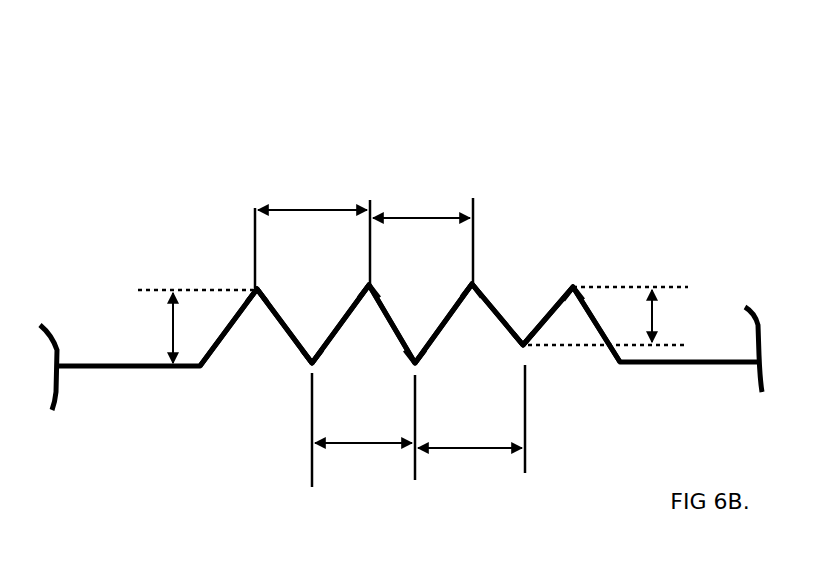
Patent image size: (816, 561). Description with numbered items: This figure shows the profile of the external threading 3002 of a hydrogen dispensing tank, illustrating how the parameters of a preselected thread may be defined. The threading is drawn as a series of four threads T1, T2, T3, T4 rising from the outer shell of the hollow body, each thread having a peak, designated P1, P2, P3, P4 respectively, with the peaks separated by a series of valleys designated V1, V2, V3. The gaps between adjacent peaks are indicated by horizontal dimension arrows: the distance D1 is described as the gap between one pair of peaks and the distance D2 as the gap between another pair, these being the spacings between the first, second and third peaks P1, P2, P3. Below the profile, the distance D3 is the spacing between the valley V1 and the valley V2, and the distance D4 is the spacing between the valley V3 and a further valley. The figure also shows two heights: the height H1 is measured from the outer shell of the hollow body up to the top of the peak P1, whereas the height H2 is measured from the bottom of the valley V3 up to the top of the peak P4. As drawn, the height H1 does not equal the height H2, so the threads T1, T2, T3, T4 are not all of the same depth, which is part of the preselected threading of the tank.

The external threading 3002 is at (150, 158).
The height from outer shell to top of peak P1 H1 is at (172, 329).
The height from bottom of valley V3 to top of peak P4 H2 is at (653, 323).
The distance D1 is at (318, 210).
The distance D2 is at (412, 218).
The distance D3 is at (360, 445).
The distance D4 is at (467, 450).
The peak P1 is at (263, 289).
The peak P2 is at (376, 285).
The peak P3 is at (479, 283).
The peak P4 is at (577, 281).
The valley V1 is at (303, 367).
The valley V2 is at (410, 367).
The valley V3 is at (519, 350).
The first thread T1 is at (256, 327).
The second thread T2 is at (363, 324).
The third thread T3 is at (469, 323).
The fourth thread T4 is at (571, 324).